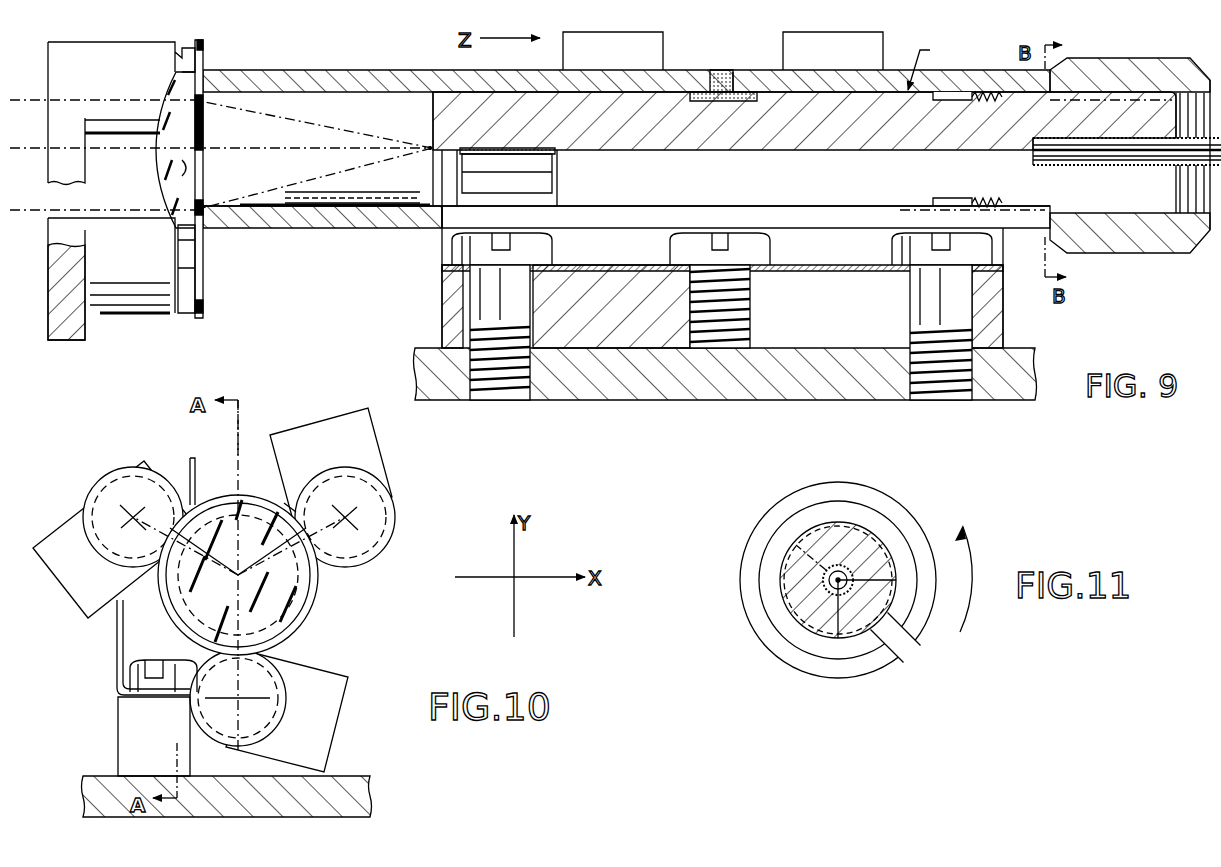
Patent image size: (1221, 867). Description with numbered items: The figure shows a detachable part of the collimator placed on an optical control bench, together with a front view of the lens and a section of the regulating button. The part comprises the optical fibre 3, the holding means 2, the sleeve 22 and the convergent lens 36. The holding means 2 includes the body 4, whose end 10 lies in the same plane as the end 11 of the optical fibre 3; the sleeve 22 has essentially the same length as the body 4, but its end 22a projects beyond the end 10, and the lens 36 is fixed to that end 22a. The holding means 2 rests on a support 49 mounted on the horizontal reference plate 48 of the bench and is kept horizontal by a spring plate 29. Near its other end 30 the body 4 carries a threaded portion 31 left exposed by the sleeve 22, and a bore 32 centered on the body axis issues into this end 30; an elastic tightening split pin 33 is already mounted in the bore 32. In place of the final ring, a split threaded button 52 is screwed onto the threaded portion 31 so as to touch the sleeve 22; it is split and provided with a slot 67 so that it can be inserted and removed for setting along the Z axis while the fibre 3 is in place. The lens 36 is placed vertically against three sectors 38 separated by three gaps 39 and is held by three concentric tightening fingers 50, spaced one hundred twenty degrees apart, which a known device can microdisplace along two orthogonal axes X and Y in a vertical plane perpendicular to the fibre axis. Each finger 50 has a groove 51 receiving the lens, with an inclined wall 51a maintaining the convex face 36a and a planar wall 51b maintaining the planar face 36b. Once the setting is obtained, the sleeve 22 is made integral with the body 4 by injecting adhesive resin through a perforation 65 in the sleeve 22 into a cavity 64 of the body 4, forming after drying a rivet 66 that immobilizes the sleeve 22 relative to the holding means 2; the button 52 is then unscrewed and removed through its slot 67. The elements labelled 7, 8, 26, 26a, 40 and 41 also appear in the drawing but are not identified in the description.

In FIG. 9, the holding means 2 is at (928, 65).
In FIG. 9, the optical fibre 3 is at (835, 150).
In FIG. 11, the optical fibre 3 is at (827, 587).
In FIG. 9, the body 4 is at (549, 123).
In FIG. 11, the body 4 is at (857, 551).
In FIG. 9, the detector element 7 is at (555, 153).
In FIG. 9, the detector housing 8 is at (555, 182).
In FIG. 9, the end of body 10 is at (426, 176).
In FIG. 9, the end of optical fibre 11 is at (430, 146).
In FIG. 9, the sleeve 22 is at (958, 80).
In FIG. 9, the end of sleeve 22a is at (216, 229).
In FIG. 9, the screw 26 is at (523, 310).
In FIG. 10, the screw 26 is at (174, 694).
In FIG. 9, the mounting plate 26a is at (686, 306).
In FIG. 9, the spring plate 29 is at (851, 62).
In FIG. 10, the spring plate 29 is at (115, 648).
In FIG. 9, the other end of body 30 is at (1175, 182).
In FIG. 9, the threaded portion 31 is at (990, 206).
In FIG. 9, the bore 32 is at (1123, 133).
In FIG. 9, the elastic tightening split pin 33 is at (1097, 172).
In FIG. 11, the elastic tightening split pin 33 is at (854, 586).
In FIG. 9, the convergent lens 36 is at (164, 150).
In FIG. 10, the convergent lens 36 is at (183, 610).
In FIG. 9, the convex face 36a is at (161, 124).
In FIG. 9, the planar face 36b is at (202, 152).
In FIG. 9, the sectors 38 is at (187, 172).
In FIG. 10, the sectors 38 is at (240, 494).
In FIG. 9, the gaps 39 is at (301, 182).
In FIG. 10, the gaps 39 is at (322, 568).
In FIG. 9, the light rays 40 is at (302, 150).
In FIG. 10, the light rays 40 is at (236, 576).
In FIG. 9, the incident light 41 is at (82, 102).
In FIG. 9, the horizontal reference plate 48 is at (426, 349).
In FIG. 10, the horizontal reference plate 48 is at (345, 779).
In FIG. 9, the support 49 is at (442, 296).
In FIG. 10, the support 49 is at (117, 724).
In FIG. 9, the tightening fingers 50 is at (112, 90).
In FIG. 10, the tightening fingers 50 is at (113, 468).
In FIG. 9, the groove 51 is at (201, 40).
In FIG. 9, the inclined wall 51a is at (173, 317).
In FIG. 9, the planar wall 51b is at (199, 317).
In FIG. 9, the split threaded button 52 is at (1150, 46).
In FIG. 11, the split threaded button 52 is at (758, 532).
In FIG. 9, the cavity 64 is at (720, 101).
In FIG. 9, the perforation 65 is at (713, 72).
In FIG. 9, the rivet 66 is at (733, 72).
In FIG. 11, the slot 67 is at (898, 643).